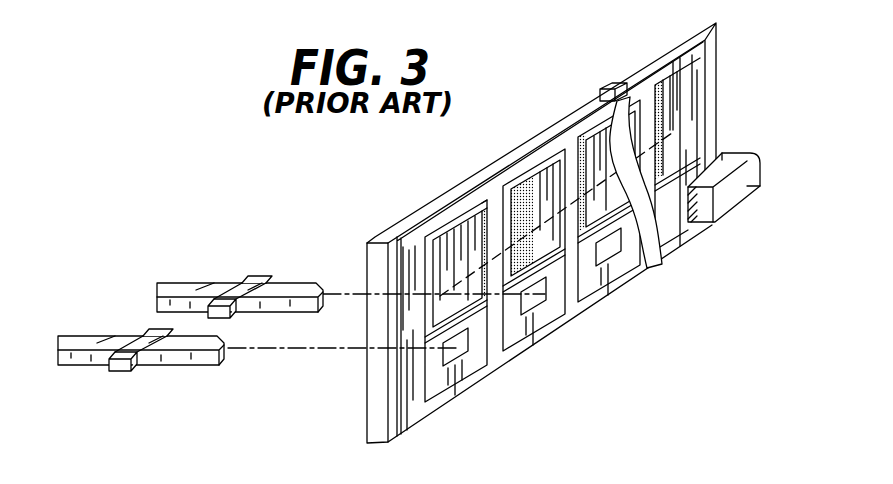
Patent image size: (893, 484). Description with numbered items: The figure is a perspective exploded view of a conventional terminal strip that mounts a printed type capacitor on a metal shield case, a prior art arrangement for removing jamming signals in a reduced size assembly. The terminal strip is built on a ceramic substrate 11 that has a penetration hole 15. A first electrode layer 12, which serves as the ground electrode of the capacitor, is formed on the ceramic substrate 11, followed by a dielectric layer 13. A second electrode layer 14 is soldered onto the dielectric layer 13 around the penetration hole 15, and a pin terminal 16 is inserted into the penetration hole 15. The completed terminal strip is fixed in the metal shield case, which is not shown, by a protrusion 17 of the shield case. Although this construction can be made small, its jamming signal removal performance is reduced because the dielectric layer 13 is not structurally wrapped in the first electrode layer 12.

The ceramic substrate 11 is at (367, 275).
The first electrode layer 12 is at (380, 238).
The dielectric layer 13 is at (425, 237).
The second electrode layer 14 is at (462, 237).
The penetration hole 15 is at (461, 356).
The pin terminal 16 is at (122, 342).
The protrusion 17 is at (757, 205).